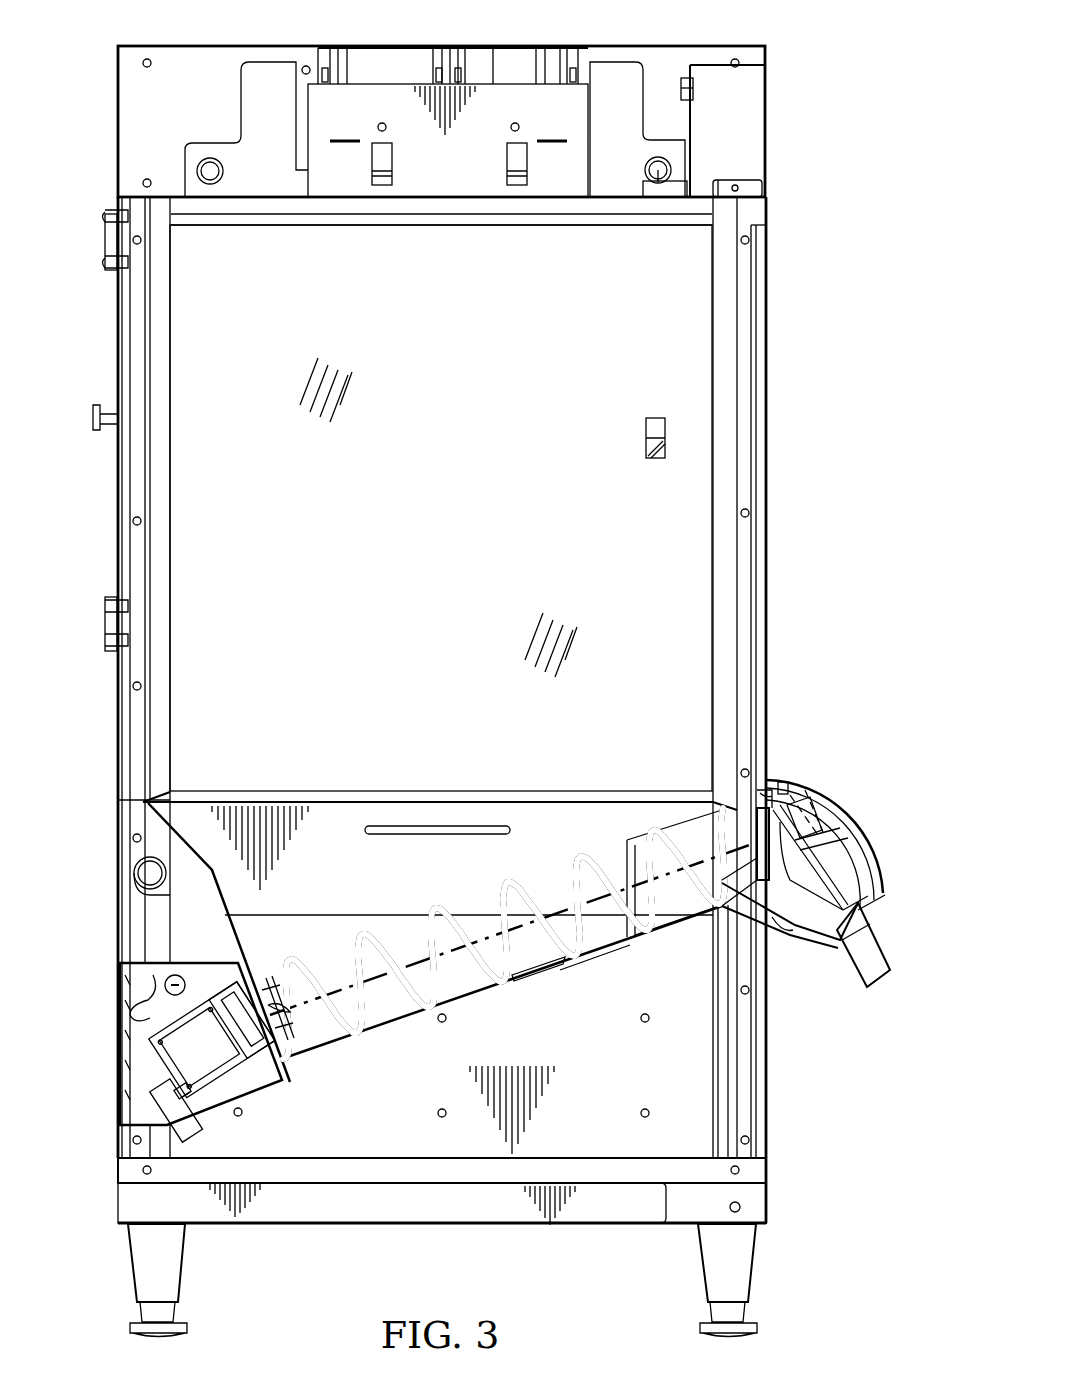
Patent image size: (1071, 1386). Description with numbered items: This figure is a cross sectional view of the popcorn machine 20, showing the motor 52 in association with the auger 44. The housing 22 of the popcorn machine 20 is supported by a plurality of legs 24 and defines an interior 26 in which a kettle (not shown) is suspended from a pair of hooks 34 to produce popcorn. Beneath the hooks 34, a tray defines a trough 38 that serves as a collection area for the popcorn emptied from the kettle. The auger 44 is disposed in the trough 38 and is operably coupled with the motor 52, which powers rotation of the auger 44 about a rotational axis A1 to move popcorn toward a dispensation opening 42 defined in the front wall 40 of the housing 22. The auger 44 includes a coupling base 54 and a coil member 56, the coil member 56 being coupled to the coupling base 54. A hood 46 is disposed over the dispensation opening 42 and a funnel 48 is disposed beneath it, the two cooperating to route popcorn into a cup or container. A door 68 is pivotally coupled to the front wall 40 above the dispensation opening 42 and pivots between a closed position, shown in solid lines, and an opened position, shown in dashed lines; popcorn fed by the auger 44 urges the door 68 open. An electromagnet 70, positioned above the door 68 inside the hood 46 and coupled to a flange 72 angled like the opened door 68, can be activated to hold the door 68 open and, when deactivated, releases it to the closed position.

The popcorn machine 20 is at (849, 68).
The housing 22 is at (90, 812).
The legs 24 is at (130, 1264).
The interior 26 is at (683, 573).
The hooks 34 is at (282, 776).
The trough 38 is at (385, 936).
The front wall 40 is at (766, 1036).
The dispensation opening 42 is at (770, 798).
The auger 44 is at (534, 890).
The hood 46 is at (890, 890).
The funnel 48 is at (872, 956).
The motor 52 is at (234, 1080).
The coupling base 54 is at (278, 978).
The coil member 56 is at (478, 986).
The door 68 is at (757, 842).
The electromagnet 70 is at (830, 833).
The flange 72 is at (808, 803).
The rotational axis A1 is at (444, 944).